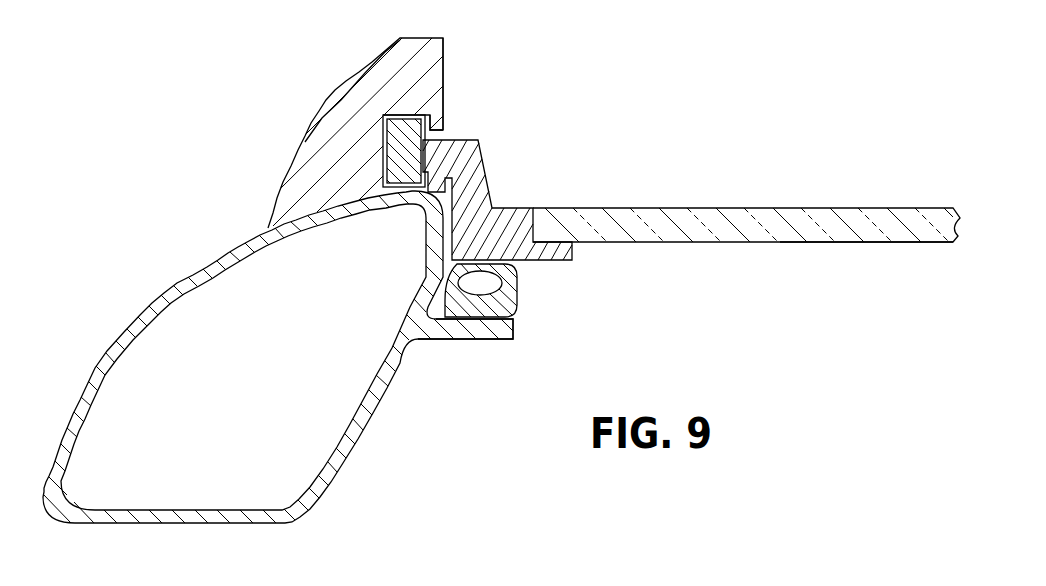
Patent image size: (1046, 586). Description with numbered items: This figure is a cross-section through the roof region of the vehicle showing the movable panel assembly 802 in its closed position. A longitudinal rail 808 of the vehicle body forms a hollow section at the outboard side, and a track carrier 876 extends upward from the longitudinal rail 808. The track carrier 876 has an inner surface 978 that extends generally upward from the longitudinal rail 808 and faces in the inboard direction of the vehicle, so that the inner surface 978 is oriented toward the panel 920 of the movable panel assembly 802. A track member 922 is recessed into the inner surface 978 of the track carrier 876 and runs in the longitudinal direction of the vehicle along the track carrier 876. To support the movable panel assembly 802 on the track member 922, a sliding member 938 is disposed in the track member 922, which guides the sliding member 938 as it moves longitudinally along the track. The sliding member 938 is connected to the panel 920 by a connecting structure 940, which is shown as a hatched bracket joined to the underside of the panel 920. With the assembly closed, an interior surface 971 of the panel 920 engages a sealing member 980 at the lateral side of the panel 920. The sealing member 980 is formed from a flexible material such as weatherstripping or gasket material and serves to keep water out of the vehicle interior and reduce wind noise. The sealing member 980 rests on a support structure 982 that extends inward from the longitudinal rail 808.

The movable panel assembly 802 is at (830, 166).
The longitudinal rail 808 is at (140, 316).
The track carrier 876 is at (294, 156).
The panel 920 is at (868, 208).
The track member 922 is at (442, 88).
The sliding member 938 is at (413, 113).
The connecting structure 940 is at (489, 166).
The interior surface 971 is at (840, 242).
The inner surface 978 is at (443, 128).
The sealing member 980 is at (520, 279).
The support structure 982 is at (487, 340).